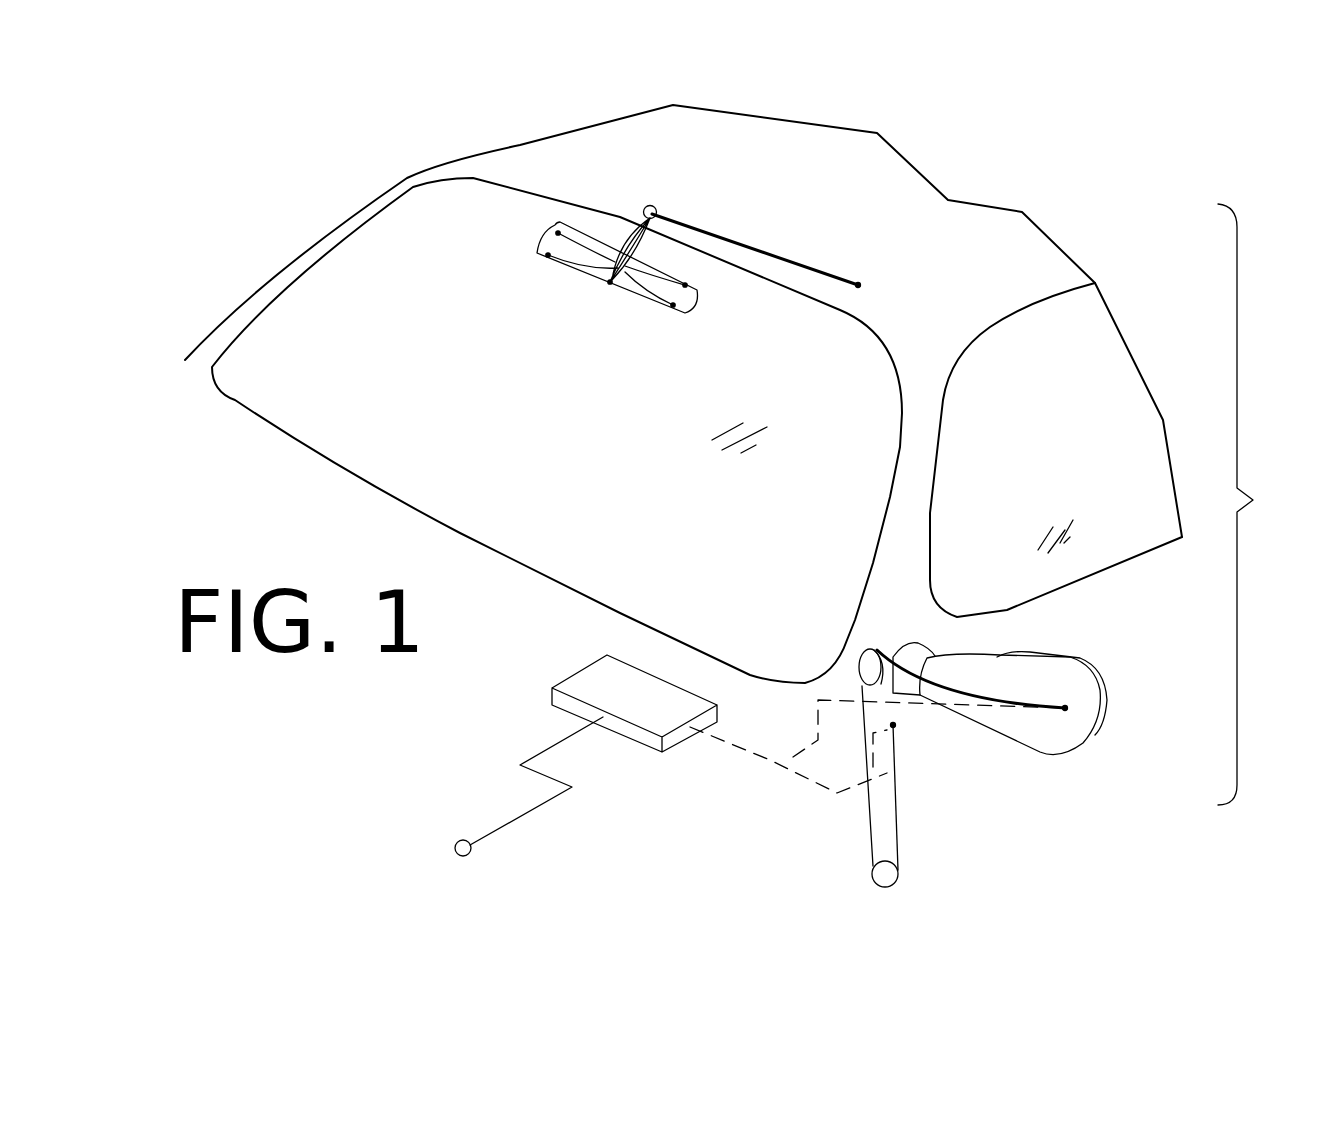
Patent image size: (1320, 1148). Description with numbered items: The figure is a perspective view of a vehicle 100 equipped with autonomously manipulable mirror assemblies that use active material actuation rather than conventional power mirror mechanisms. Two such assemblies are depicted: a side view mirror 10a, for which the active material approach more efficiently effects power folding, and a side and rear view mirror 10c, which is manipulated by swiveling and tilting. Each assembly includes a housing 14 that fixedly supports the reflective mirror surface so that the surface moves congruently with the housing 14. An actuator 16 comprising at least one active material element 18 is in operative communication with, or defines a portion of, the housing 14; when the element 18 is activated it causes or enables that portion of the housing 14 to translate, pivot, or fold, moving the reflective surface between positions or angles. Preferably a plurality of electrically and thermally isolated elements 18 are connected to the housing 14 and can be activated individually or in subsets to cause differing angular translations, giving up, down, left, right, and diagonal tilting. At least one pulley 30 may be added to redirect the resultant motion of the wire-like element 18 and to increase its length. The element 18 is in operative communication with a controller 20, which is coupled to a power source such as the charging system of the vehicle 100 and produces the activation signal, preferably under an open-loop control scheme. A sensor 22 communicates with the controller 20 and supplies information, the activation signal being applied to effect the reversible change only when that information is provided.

The vehicle 100 is at (993, 288).
The side view mirror 10a is at (1002, 790).
The side and rear view mirror 10c is at (562, 288).
The housing 14 is at (697, 297).
The actuator 16 is at (728, 207).
The active material element 18 is at (827, 270).
The controller 20 is at (647, 706).
The sensor 22 is at (450, 848).
The pulley 30 is at (650, 205).